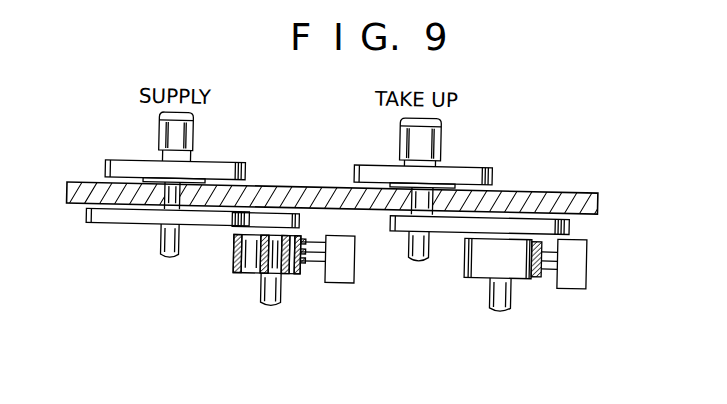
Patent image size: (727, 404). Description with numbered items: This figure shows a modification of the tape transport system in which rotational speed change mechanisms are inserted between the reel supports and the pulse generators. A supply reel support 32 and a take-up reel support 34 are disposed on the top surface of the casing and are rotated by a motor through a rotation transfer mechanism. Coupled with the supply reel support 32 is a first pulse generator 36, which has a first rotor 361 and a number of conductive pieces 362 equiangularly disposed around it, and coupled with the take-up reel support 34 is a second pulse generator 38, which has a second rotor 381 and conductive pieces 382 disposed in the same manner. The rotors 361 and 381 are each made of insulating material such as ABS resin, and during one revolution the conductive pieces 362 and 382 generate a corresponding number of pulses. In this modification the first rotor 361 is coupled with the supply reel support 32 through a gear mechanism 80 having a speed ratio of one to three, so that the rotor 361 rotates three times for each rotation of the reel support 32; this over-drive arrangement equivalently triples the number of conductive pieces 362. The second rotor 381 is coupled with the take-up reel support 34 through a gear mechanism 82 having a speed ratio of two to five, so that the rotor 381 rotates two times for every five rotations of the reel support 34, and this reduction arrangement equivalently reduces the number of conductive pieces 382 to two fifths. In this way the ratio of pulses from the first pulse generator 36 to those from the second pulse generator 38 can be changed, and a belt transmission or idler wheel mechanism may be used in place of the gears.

The supply reel support 32 is at (224, 158).
The take-up reel support 34 is at (469, 157).
The gear mechanism 80 is at (260, 219).
The gear mechanism 82 is at (460, 225).
The first pulse generator 36 is at (285, 296).
The first rotor 361 is at (256, 266).
The conductive pieces 362 is at (299, 265).
The second pulse generator 38 is at (519, 297).
The second rotor 381 is at (483, 262).
The conductive pieces 382 is at (533, 265).